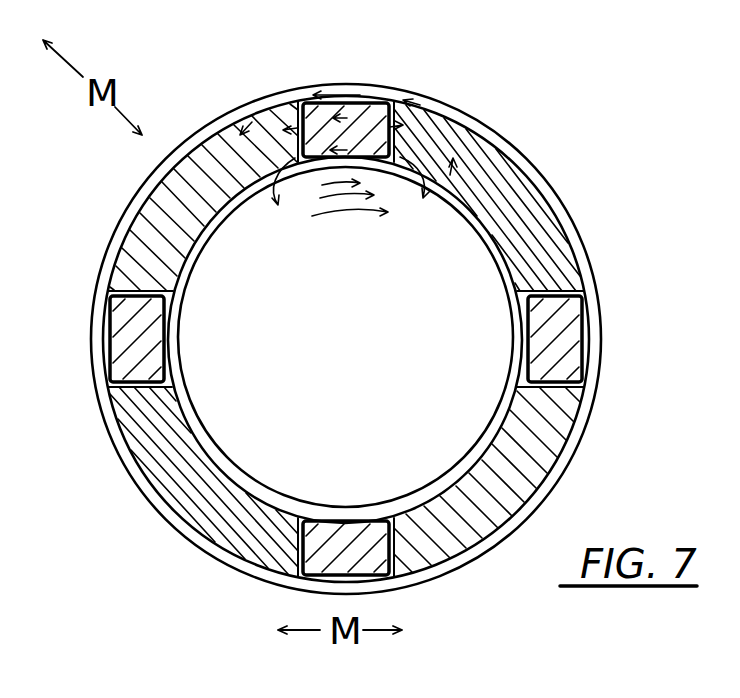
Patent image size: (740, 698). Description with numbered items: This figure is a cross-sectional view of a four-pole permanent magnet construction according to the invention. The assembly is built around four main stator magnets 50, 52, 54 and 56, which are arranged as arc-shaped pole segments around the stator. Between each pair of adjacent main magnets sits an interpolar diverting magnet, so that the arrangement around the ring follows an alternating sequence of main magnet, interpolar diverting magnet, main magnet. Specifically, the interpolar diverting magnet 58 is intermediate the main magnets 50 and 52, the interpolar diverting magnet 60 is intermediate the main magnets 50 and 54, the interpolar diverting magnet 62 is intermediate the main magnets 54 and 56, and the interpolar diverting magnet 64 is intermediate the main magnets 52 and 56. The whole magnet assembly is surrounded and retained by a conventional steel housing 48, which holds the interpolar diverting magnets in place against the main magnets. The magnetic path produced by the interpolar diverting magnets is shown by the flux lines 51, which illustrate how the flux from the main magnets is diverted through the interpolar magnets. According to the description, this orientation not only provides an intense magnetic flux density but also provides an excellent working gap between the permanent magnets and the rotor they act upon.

The steel housing 48 is at (592, 264).
The main stator magnet 50 is at (533, 217).
The flux lines 51 is at (392, 126).
The main stator magnet 52 is at (550, 428).
The main stator magnet 54 is at (150, 243).
The main stator magnet 56 is at (163, 447).
The interpolar diverting magnet 58 is at (580, 317).
The interpolar diverting magnet 60 is at (343, 128).
The interpolar diverting magnet 62 is at (115, 333).
The interpolar diverting magnet 64 is at (372, 582).